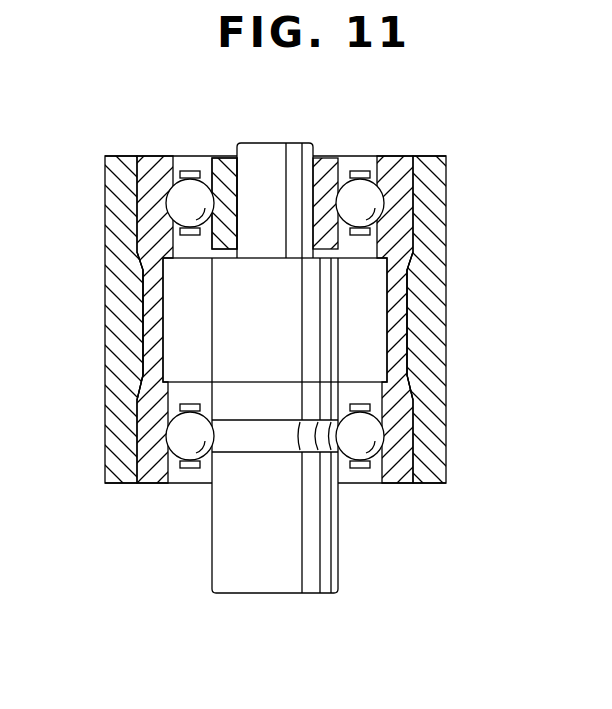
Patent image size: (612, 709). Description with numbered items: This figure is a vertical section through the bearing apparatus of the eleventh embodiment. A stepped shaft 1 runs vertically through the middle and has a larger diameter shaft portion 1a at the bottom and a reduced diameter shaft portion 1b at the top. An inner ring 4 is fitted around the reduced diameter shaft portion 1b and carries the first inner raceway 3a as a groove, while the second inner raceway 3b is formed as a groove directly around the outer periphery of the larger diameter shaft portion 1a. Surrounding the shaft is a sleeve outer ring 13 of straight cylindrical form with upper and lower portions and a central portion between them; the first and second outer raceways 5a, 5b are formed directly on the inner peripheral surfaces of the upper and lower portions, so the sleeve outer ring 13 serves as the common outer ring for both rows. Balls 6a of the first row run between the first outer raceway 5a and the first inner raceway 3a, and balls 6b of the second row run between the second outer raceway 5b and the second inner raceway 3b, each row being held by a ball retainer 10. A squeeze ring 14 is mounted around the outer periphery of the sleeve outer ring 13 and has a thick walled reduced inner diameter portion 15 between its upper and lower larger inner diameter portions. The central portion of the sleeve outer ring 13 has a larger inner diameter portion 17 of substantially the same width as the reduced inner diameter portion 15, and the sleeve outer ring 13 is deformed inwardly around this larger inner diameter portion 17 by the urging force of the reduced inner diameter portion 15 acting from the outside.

The stepped shaft 1 is at (275, 370).
The larger diameter shaft portion 1a is at (262, 573).
The reduced diameter shaft portion 1b is at (262, 165).
The first inner raceway 3a is at (213, 167).
The second inner raceway 3b is at (213, 486).
The inner ring 4 is at (226, 164).
The first outer raceway 5a is at (172, 208).
The second outer raceway 5b is at (168, 448).
The balls for the first row 6a is at (182, 188).
The balls for the second row 6b is at (178, 418).
The ball retainer 10 is at (361, 168).
The sleeve outer ring 13 is at (405, 192).
The squeeze ring 14 is at (433, 230).
The reduced inner diameter portion 15 is at (408, 315).
The larger inner diameter portion 17 is at (163, 288).